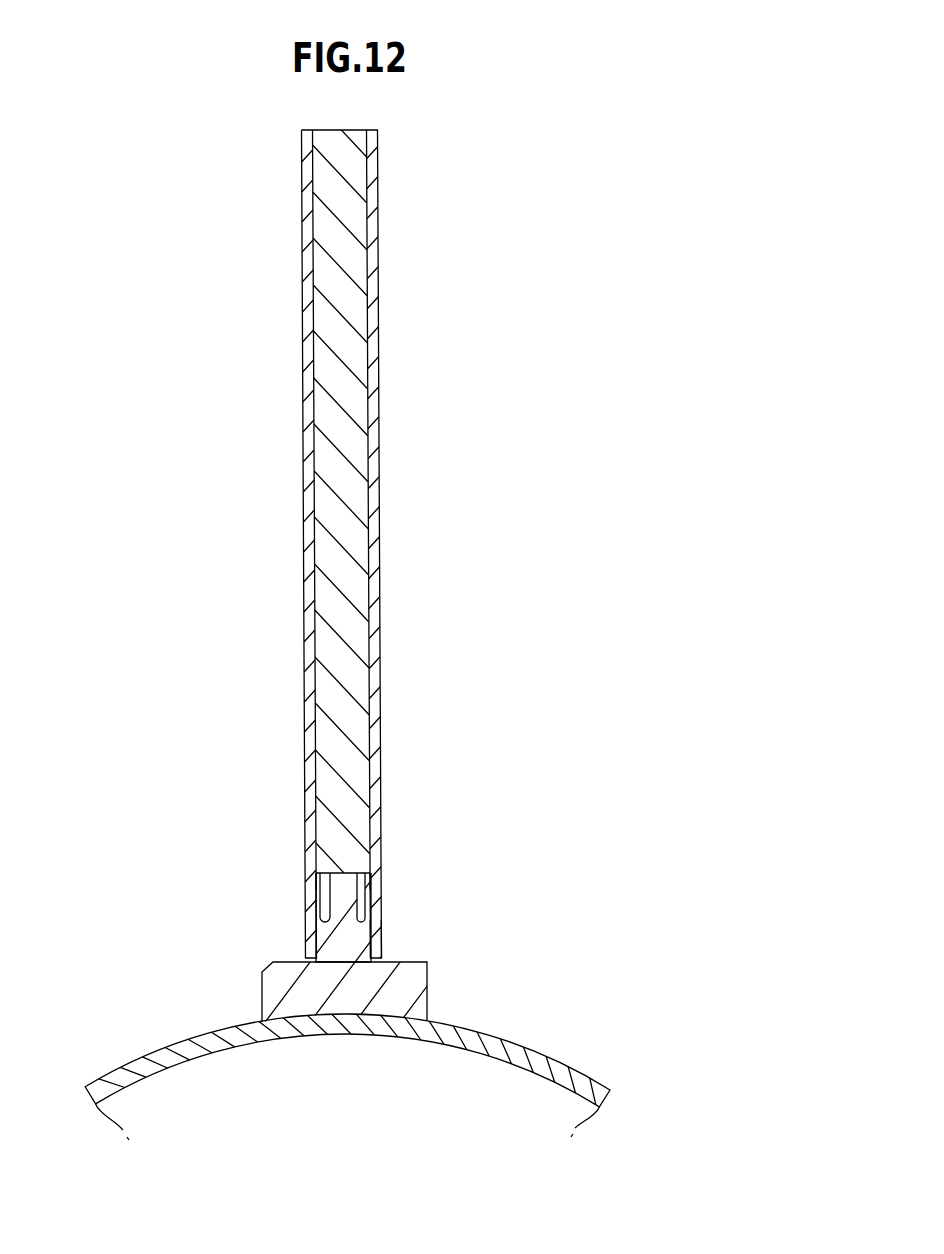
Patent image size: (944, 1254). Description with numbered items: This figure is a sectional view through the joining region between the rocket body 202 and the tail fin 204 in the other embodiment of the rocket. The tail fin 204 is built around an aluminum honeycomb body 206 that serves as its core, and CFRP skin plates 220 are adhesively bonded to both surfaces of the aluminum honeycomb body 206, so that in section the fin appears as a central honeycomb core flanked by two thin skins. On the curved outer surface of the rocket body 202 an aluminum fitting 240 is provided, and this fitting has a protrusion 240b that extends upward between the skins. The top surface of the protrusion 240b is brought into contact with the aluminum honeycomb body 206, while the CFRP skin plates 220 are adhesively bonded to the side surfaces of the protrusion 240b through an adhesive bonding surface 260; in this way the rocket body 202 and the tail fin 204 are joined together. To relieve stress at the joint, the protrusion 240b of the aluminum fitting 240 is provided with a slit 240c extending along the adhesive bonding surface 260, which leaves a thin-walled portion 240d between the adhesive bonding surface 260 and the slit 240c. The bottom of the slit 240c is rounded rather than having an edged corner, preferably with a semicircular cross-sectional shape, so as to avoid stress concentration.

The rocket body 202 is at (577, 1059).
The tail fin 204 is at (433, 297).
The aluminum honeycomb body 206 is at (342, 512).
The CFRP skin plates 220 is at (304, 410).
The aluminum fitting 240 is at (318, 947).
The protrusion 240b is at (334, 938).
The slit 240c is at (320, 915).
The thin-walled portion 240d is at (375, 886).
The adhesive bonding surface 260 is at (376, 932).